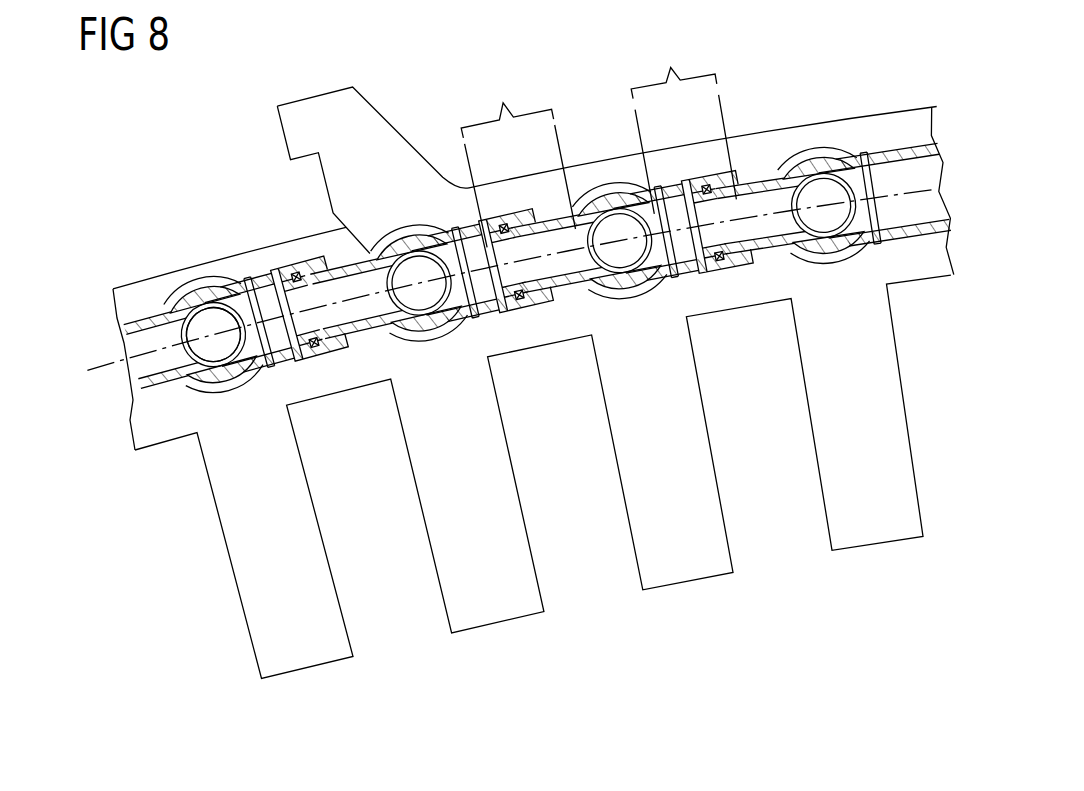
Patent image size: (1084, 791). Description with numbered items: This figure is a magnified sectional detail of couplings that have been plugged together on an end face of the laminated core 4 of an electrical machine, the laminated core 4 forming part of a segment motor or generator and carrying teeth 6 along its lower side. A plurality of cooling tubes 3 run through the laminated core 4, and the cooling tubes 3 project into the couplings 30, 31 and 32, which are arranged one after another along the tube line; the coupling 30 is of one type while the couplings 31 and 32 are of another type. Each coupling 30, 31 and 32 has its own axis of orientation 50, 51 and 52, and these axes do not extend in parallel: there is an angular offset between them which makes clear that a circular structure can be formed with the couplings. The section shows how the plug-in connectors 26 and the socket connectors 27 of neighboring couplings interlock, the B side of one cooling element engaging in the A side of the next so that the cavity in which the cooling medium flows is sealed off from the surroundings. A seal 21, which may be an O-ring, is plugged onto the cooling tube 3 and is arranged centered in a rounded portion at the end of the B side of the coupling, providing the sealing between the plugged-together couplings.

The cooling tube 3 is at (210, 322).
The laminated core 4 is at (373, 127).
The teeth 6 is at (453, 570).
The seal 21 is at (515, 300).
The plug-in connector 26 is at (518, 159).
The socket connector 27 is at (683, 124).
The coupling 30 is at (243, 390).
The coupling 31 is at (440, 313).
The coupling 32 is at (653, 287).
The axis of orientation 50 is at (103, 375).
The axis of orientation 51 is at (372, 298).
The axis of orientation 52 is at (572, 295).